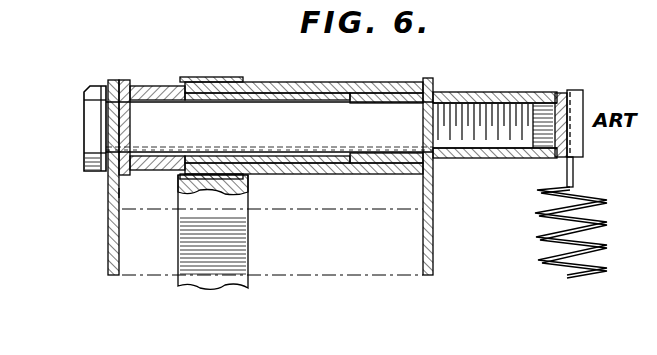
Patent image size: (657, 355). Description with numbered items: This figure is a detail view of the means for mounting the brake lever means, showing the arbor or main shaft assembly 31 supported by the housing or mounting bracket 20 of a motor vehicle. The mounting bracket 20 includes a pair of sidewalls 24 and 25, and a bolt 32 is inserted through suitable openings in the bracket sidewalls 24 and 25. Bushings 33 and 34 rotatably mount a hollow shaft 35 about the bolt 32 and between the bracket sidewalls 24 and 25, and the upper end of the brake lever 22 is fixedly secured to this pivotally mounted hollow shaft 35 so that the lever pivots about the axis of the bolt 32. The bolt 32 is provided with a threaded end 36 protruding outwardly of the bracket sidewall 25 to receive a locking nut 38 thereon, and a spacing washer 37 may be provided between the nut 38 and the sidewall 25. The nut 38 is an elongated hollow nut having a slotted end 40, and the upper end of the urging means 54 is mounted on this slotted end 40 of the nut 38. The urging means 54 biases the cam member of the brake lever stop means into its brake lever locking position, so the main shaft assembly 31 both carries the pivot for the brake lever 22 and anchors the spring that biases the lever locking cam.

The housing or mounting bracket 20 is at (100, 245).
The brake lever 22 is at (222, 262).
The sidewall 24 is at (124, 199).
The sidewall 25 is at (423, 238).
The arbor or main shaft assembly 31 is at (90, 80).
The bolt 32 is at (150, 110).
The bushing 33 is at (187, 97).
The bushing 34 is at (370, 97).
The hollow shaft 35 is at (272, 82).
The threaded end 36 is at (492, 112).
The spacing washer 37 is at (446, 92).
The locking nut 38 is at (560, 93).
The slotted end 40 is at (569, 92).
The urging means 54 is at (548, 259).